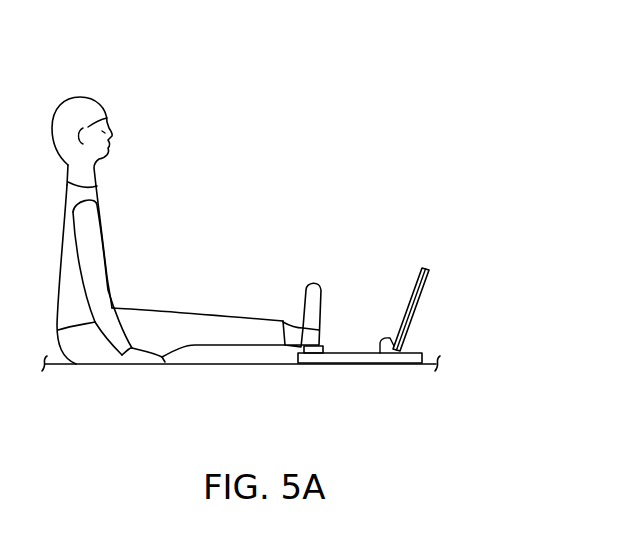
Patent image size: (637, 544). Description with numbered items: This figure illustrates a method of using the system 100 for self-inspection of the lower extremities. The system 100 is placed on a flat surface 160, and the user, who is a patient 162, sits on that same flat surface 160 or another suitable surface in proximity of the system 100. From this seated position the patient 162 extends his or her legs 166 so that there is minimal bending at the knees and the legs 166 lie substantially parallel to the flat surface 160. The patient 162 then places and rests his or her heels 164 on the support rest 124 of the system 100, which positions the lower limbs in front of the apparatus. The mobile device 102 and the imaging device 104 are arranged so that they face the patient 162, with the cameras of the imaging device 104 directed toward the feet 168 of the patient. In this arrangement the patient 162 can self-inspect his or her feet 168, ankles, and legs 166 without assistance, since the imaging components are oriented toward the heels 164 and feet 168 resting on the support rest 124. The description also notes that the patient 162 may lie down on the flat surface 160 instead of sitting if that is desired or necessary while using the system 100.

The system 100 is at (419, 248).
The mobile device 102 is at (421, 293).
The imaging device 104 is at (382, 365).
The support rest 124 is at (330, 365).
The flat surface 160 is at (180, 365).
The patient 162 is at (83, 97).
The heels 164 is at (320, 332).
The legs 166 is at (192, 308).
The feet 168 is at (303, 300).